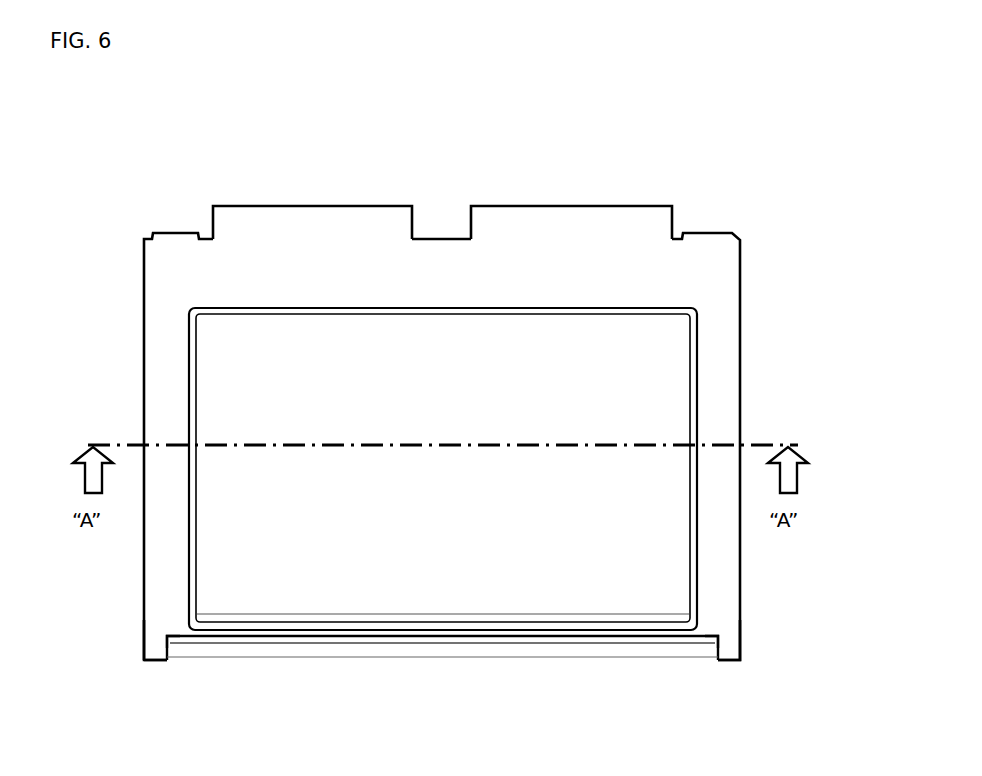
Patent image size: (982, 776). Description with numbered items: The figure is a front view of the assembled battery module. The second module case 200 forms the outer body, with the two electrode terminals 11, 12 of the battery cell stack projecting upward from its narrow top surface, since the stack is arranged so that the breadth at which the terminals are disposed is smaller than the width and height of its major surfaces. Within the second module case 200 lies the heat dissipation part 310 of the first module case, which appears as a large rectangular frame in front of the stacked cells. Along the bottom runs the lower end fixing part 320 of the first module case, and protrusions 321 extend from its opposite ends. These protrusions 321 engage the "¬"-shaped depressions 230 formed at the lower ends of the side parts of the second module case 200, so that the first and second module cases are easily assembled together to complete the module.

The electrode terminal 11 is at (293, 217).
The electrode terminal 12 is at (549, 217).
The second module case 200 is at (712, 284).
The heat dissipation part 310 is at (664, 366).
The lower end fixing part 320 is at (460, 647).
The protrusion 321 is at (185, 644).
The depression 230 is at (173, 628).